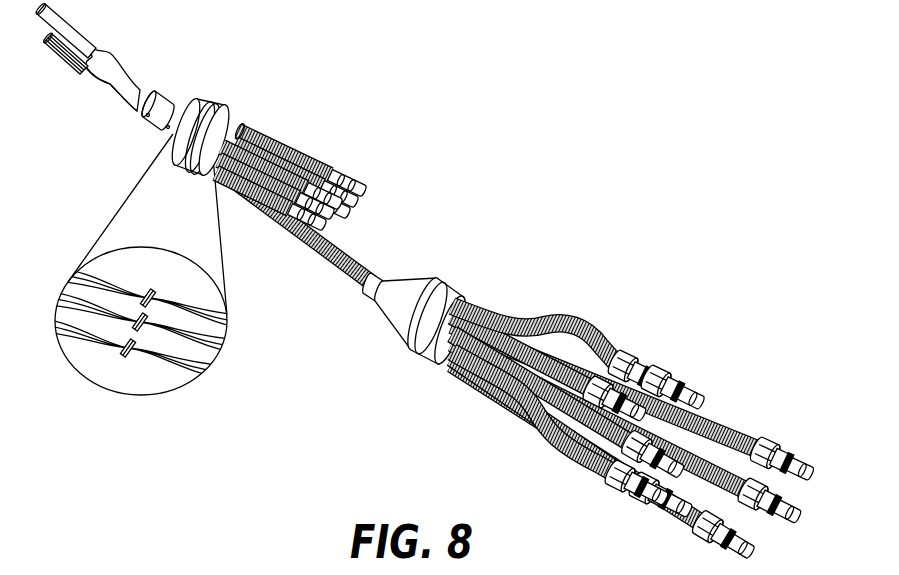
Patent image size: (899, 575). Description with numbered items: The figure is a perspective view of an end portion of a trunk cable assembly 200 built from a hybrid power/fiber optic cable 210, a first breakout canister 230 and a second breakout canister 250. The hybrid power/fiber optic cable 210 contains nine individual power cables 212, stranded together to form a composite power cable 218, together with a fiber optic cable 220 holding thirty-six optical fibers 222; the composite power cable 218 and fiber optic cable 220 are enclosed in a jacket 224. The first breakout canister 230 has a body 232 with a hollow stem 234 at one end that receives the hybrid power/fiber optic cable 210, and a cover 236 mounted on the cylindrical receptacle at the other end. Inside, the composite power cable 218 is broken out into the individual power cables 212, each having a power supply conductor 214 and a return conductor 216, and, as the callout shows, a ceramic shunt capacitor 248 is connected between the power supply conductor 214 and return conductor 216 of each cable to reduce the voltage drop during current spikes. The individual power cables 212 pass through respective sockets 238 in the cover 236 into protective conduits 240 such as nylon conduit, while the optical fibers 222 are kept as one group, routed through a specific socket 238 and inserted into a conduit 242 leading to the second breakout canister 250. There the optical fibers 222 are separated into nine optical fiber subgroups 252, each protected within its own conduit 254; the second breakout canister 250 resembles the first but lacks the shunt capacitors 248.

The trunk cable assembly 200 is at (426, 282).
The hybrid power/fiber optic cable 210 is at (110, 55).
The individual power cable 212 is at (98, 275).
The power supply conductor 214 is at (141, 295).
The return conductor 216 is at (168, 302).
The composite power cable 218 is at (49, 13).
The fiber optic cable 220 is at (68, 41).
The optical fibers 222 is at (72, 70).
The jacket 224 is at (108, 93).
The first breakout canister 230 is at (234, 141).
The body 232 is at (213, 102).
The hollow stem 234 is at (175, 103).
The cover 236 is at (243, 126).
The sockets 238 is at (215, 158).
The protective conduits 240 is at (300, 153).
The conduit 242 is at (320, 262).
The shunt capacitor 248 is at (119, 356).
The second breakout canister 250 is at (416, 278).
The optical fiber subgroups 252 is at (634, 425).
The conduit 254 is at (542, 432).